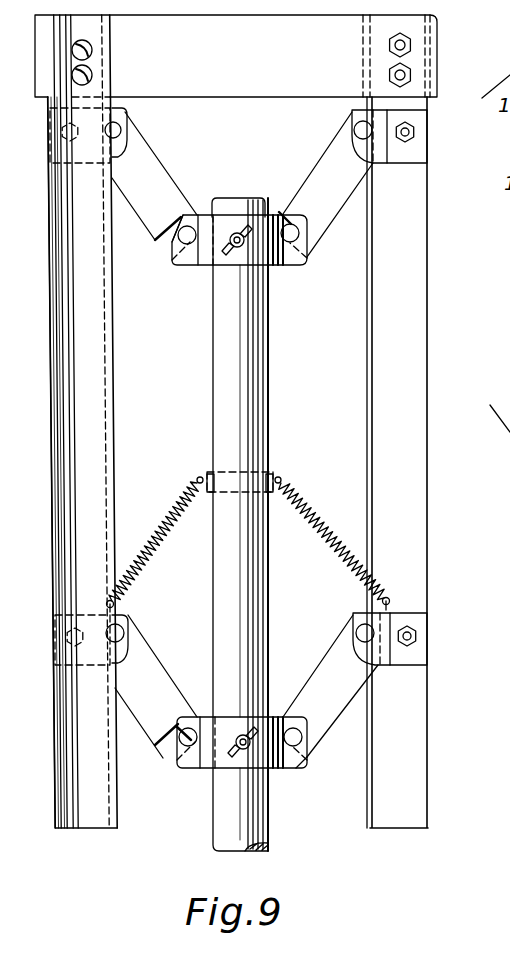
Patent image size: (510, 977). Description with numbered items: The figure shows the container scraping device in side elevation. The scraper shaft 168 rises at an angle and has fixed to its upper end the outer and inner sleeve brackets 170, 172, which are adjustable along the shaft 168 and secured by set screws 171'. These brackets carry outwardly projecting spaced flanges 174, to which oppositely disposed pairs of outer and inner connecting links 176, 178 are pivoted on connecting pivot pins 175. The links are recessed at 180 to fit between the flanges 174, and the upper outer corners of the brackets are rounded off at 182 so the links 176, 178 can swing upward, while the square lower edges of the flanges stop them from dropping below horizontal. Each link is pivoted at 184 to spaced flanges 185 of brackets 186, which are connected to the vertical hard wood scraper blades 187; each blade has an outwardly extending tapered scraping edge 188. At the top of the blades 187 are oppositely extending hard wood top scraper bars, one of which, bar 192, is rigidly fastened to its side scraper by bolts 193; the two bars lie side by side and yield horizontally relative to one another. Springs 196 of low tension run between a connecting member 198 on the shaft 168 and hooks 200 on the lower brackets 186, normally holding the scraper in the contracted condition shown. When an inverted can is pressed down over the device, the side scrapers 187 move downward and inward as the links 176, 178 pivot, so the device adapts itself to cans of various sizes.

The shaft 168 is at (255, 372).
The outer sleeve bracket 170 is at (222, 257).
The set screws 171' is at (232, 461).
The inner sleeve bracket 172 is at (268, 772).
The flanges 174 is at (287, 260).
The connecting pivot pins 175 is at (190, 237).
The outer connecting links 176 is at (158, 175).
The inner connecting links 178 is at (148, 667).
The recesses 180 is at (167, 245).
The rounded upper outer corners 182 is at (290, 225).
The pivot 184 is at (123, 635).
The spaced flanges 185 is at (113, 157).
The brackets 186 is at (413, 153).
The scraper blades 187 is at (102, 372).
The tapered scraping edge 188 is at (65, 490).
The top scraper bar 192 is at (265, 84).
The bolts 193 is at (93, 50).
The springs 196 is at (145, 528).
The spring connector 198 is at (197, 478).
The hooks 200 is at (118, 601).